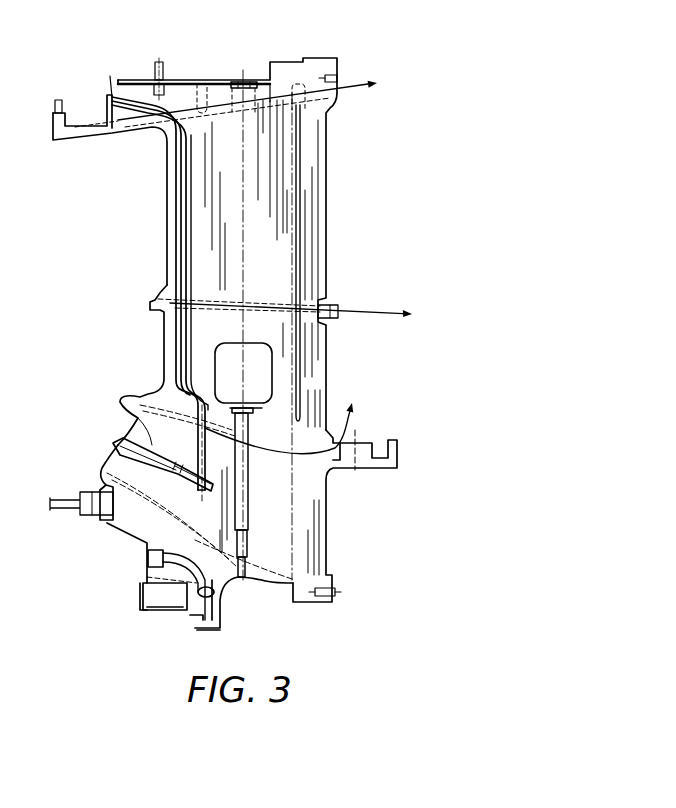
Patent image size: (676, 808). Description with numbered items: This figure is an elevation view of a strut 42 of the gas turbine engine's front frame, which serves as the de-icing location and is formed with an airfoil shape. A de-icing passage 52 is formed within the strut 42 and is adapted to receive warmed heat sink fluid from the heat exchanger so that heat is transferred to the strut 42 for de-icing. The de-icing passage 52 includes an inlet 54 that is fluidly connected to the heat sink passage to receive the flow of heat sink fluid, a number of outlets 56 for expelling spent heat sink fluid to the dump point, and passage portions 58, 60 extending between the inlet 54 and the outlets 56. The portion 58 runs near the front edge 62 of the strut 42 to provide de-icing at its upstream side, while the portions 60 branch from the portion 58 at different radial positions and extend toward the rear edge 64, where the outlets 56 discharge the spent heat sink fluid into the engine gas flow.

The strut 42 is at (400, 50).
The de-icing passage 52 is at (168, 185).
The inlet 54 is at (100, 95).
The outlets 56 is at (345, 82).
The portion 58 is at (168, 243).
The portions 60 is at (250, 128).
The front edge 62 is at (152, 326).
The rear edge 64 is at (340, 167).